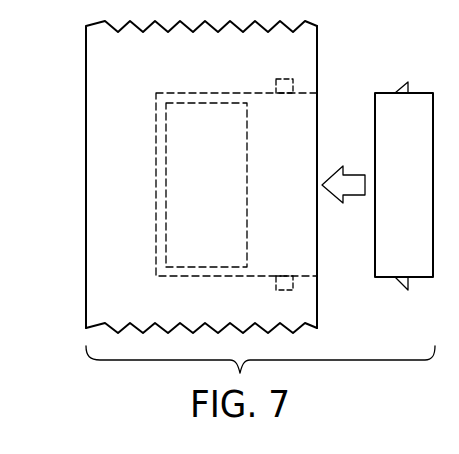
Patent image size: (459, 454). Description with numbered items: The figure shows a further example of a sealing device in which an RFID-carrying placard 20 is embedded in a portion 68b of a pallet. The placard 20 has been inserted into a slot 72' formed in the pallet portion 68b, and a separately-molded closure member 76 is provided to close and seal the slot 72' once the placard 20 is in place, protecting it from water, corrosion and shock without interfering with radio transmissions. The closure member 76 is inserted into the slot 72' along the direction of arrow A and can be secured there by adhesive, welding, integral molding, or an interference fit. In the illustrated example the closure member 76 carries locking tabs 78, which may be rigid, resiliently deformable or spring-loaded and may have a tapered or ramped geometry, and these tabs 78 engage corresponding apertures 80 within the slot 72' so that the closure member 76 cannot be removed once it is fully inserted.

The placard 20 is at (206, 121).
The wall panel 68b is at (100, 283).
The slot 72' is at (335, 177).
The closure member 76 is at (417, 181).
The locking tabs 78 is at (400, 87).
The apertures 80 is at (283, 95).
The arrow A is at (352, 196).